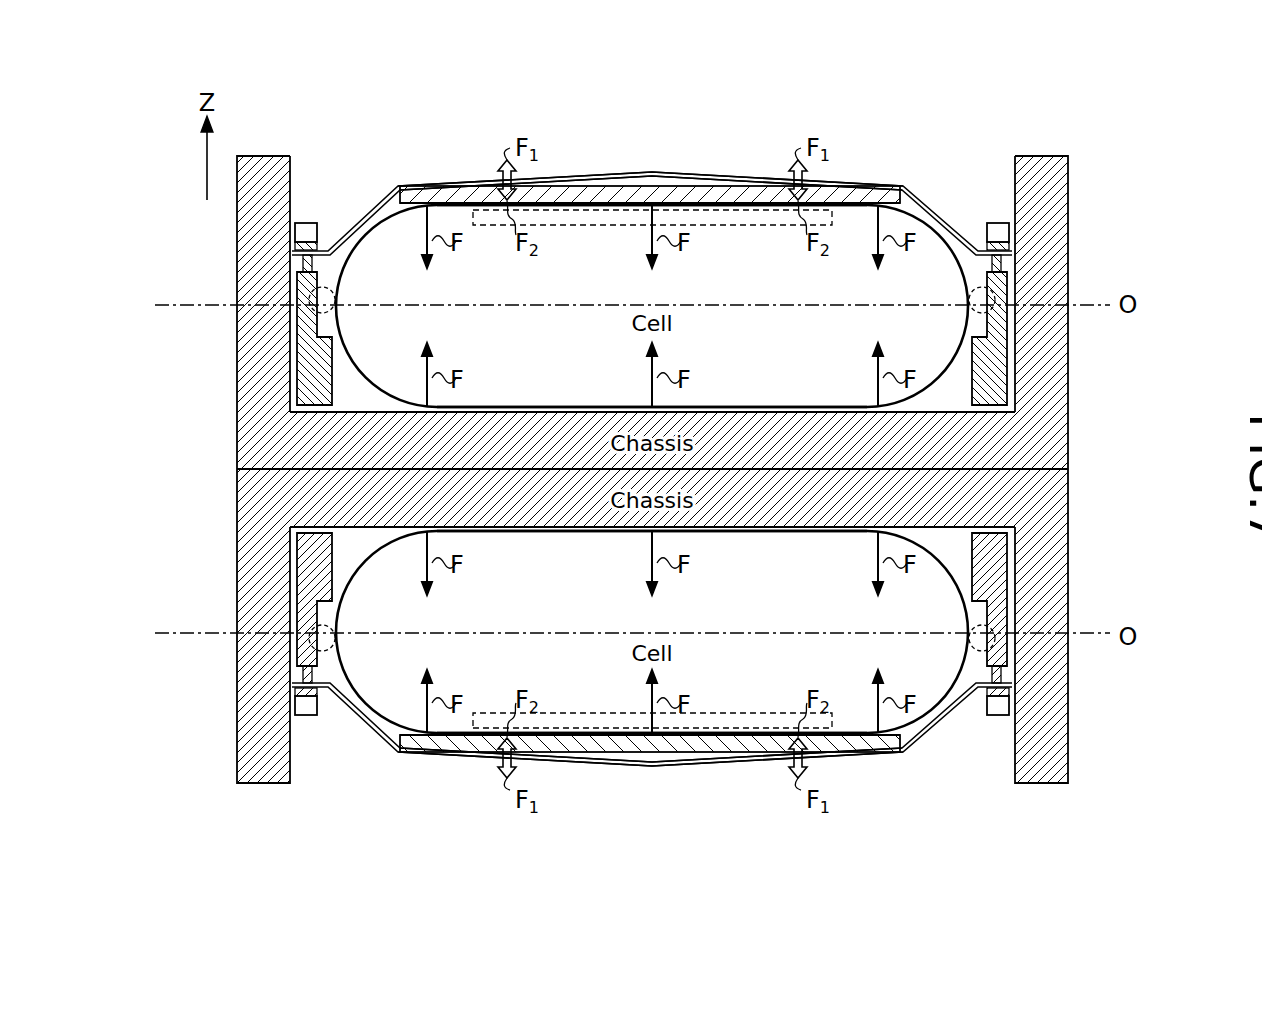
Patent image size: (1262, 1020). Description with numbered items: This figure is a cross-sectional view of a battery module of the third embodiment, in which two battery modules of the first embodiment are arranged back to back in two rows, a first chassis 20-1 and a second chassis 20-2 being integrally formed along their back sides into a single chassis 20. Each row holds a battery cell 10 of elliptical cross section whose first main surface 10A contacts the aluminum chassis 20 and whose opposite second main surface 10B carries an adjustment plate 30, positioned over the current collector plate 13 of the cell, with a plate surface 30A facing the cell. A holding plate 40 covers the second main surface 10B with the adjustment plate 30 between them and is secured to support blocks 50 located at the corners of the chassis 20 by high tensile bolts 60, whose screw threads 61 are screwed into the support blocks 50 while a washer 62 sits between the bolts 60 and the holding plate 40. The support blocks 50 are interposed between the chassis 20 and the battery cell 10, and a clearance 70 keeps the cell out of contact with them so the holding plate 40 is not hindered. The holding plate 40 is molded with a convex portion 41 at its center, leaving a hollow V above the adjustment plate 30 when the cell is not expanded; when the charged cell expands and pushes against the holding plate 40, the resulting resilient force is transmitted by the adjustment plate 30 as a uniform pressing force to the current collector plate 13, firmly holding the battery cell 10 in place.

The battery cell 10 is at (850, 250).
The first main surface 10A is at (800, 530).
The second main surface 10B is at (745, 210).
The current collector plate 13 is at (552, 210).
The chassis 20 is at (265, 404).
The first chassis 20-1 is at (1052, 404).
The second chassis 20-2 is at (1052, 542).
The adjustment plate 30 is at (455, 186).
The pressing plate surface 30A is at (608, 197).
The holding plate 40 is at (387, 194).
The convex portion 41 is at (650, 172).
The hollow V is at (665, 181).
The support block 50 is at (297, 352).
The bolt 60 is at (307, 222).
The screw thread 61 is at (303, 262).
The washer 62 is at (295, 246).
The clearance 70 is at (310, 302).